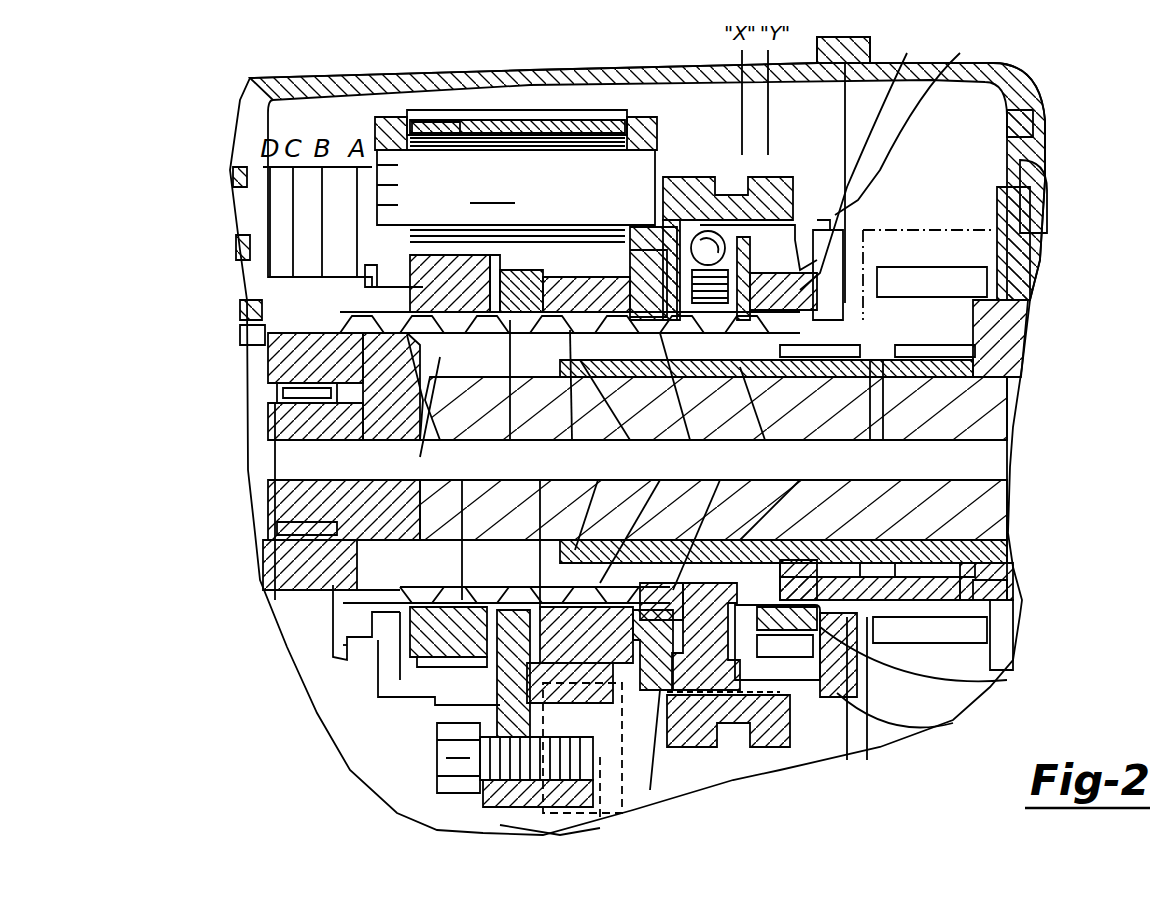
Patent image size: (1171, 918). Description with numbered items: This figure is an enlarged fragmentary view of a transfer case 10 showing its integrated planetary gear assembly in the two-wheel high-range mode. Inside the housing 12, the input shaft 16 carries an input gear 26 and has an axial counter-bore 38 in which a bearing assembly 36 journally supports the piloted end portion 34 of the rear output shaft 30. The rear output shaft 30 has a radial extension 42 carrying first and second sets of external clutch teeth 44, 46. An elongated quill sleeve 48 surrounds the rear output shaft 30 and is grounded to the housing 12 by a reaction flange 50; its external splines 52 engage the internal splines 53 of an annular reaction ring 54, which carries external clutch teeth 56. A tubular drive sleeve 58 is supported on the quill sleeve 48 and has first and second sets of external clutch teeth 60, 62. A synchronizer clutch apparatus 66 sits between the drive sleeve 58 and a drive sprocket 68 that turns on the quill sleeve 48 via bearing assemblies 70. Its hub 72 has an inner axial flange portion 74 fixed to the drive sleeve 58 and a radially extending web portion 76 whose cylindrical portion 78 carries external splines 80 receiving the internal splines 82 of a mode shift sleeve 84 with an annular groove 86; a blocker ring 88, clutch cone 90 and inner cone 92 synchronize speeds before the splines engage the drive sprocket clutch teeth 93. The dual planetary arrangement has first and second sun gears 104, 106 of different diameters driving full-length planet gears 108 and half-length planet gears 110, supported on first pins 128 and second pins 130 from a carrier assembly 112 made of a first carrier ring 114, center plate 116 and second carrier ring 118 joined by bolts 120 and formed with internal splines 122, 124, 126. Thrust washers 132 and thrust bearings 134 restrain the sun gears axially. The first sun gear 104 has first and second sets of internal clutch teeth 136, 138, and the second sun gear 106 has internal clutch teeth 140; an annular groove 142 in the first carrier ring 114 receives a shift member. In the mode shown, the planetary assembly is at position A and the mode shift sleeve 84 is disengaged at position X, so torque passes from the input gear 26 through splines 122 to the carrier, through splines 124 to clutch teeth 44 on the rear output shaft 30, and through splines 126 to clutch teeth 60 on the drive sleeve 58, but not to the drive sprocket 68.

The transfer case 10 is at (224, 114).
The housing 12 is at (379, 64).
The input shaft 16 is at (272, 362).
The input gear 26 is at (245, 305).
The rear output shaft 30 is at (995, 410).
The piloted end portion 34 is at (280, 427).
The bearing assembly 36 is at (278, 408).
The axial counter-bore 38 is at (262, 522).
The radial extension 42 is at (277, 388).
The first set of external clutch teeth 44 is at (505, 395).
The second set of external clutch teeth 46 is at (250, 336).
The quill sleeve 48 is at (763, 418).
The reaction flange 50 is at (1020, 282).
The external splines 52 is at (615, 415).
The internal splines 53 is at (570, 400).
The reaction ring 54 is at (594, 503).
The external clutch teeth 56 is at (535, 533).
The drive sleeve 58 is at (686, 399).
The first set of external clutch teeth 60 is at (781, 497).
The second set of external clutch teeth 62 is at (639, 519).
The synchronizer clutch apparatus 66 is at (804, 198).
The drive sprocket 68 is at (1000, 333).
The bearing assemblies 70 is at (1010, 368).
The hub 72 is at (655, 790).
The inner axial flange portion 74 is at (910, 548).
The radially extending web portion 76 is at (703, 667).
The cylindrical portion 78 is at (737, 690).
The external splines 80 is at (767, 703).
The internal splines 82 is at (840, 700).
The mode shift sleeve 84 is at (861, 159).
The annular groove 86 is at (722, 190).
The blocker ring 88 is at (908, 121).
The clutch cone 90 is at (863, 240).
The inner cone 92 is at (929, 662).
The drive sprocket clutch teeth 93 is at (916, 714).
The first sun gear 104 is at (453, 293).
The second sun gear 106 is at (560, 290).
The first set of full-length planet gears 108 is at (430, 125).
The second set of half-length planet gears 110 is at (535, 832).
The carrier assembly 112 is at (654, 100).
The first carrier ring 114 is at (377, 127).
The center plate 116 is at (500, 705).
The second carrier ring 118 is at (643, 220).
The bolts 120 is at (440, 760).
The internal splines 122 is at (333, 612).
The internal splines 124 is at (433, 660).
The internal splines 126 is at (877, 430).
The first pins 128 is at (516, 187).
The second pins 130 is at (598, 815).
The thrust washers 132 is at (330, 313).
The thrust bearings 134 is at (415, 413).
The first set of internal clutch teeth 136 is at (460, 527).
The second set of internal clutch teeth 138 is at (268, 578).
The internal clutch teeth 140 is at (711, 522).
The annular groove 142 is at (343, 647).